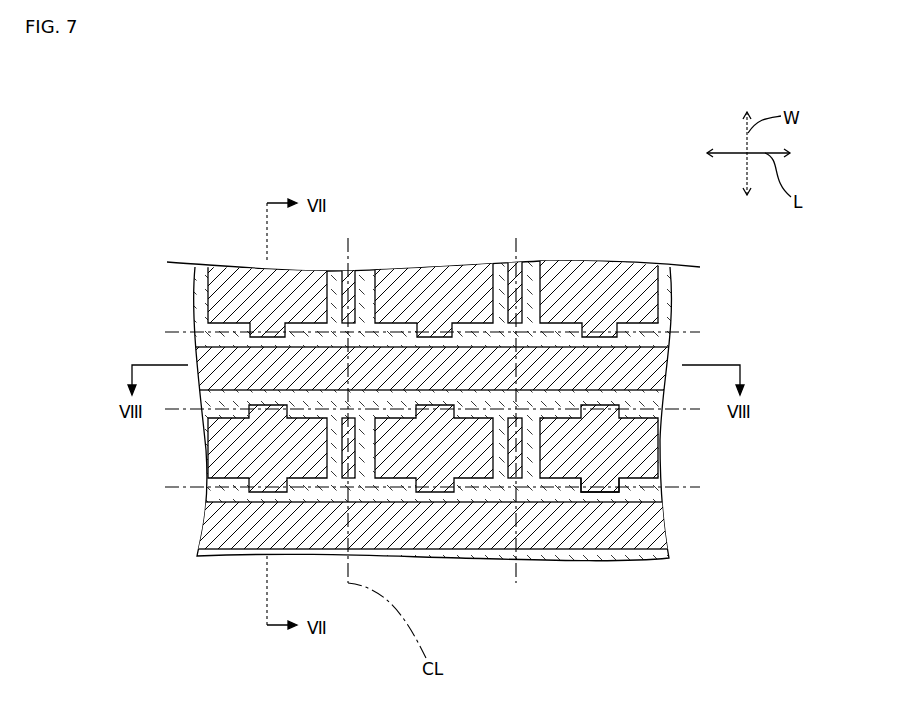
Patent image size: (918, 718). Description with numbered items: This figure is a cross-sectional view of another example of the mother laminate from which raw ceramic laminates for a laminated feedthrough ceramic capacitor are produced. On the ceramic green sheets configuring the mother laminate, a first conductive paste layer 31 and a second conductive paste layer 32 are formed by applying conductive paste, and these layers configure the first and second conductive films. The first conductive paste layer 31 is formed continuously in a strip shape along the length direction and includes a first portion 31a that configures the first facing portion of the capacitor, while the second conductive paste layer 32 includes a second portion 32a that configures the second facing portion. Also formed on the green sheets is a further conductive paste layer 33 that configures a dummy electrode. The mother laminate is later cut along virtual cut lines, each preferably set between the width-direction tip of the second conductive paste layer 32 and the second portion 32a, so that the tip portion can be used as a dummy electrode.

The first conductive paste layer 31 is at (667, 527).
The first portion 31a is at (597, 543).
The second conductive paste layer 32 is at (660, 442).
The second portion 32a is at (643, 455).
The conductive paste layer 33 is at (522, 478).